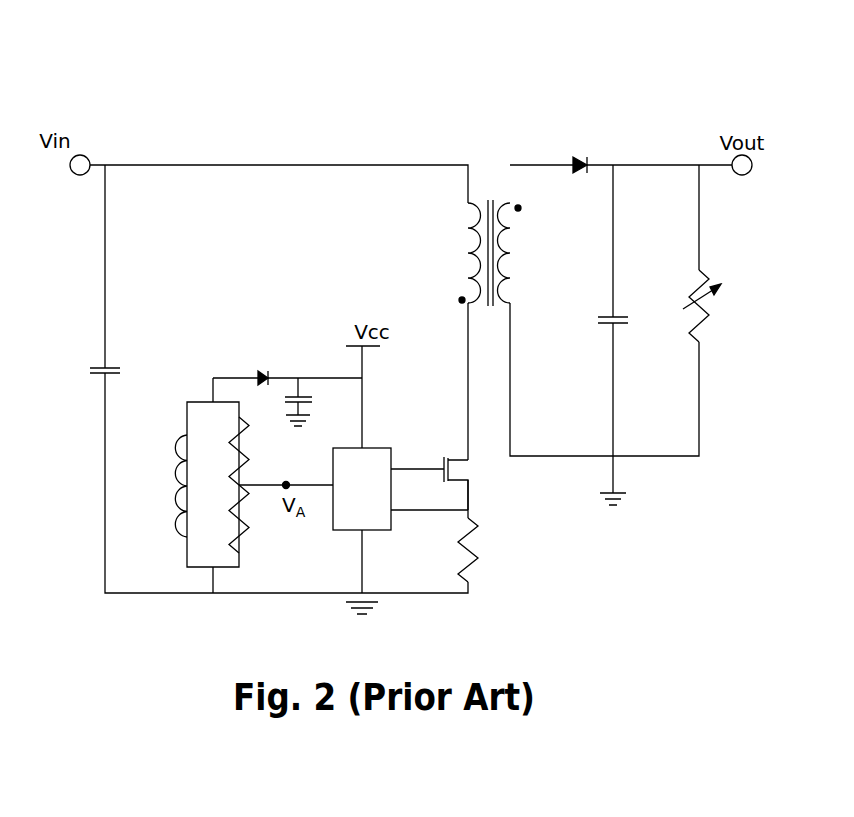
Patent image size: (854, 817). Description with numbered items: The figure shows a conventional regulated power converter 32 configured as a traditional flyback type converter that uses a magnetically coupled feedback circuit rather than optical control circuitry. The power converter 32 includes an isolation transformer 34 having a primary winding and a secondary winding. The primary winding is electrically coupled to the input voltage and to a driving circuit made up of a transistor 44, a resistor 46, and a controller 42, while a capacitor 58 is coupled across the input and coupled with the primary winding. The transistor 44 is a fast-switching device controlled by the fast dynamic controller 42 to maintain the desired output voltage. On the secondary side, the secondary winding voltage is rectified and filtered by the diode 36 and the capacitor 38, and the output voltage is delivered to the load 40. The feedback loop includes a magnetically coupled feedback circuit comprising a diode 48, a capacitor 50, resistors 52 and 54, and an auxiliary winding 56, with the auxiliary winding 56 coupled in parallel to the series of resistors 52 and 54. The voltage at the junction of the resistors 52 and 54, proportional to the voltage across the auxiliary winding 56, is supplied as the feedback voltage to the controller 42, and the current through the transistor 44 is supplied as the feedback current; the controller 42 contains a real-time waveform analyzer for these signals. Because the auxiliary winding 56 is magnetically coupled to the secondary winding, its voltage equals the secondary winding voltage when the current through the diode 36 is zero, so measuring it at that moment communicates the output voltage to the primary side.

The power converter 32 is at (648, 82).
The isolation transformer 34 is at (482, 177).
The diode 36 is at (583, 157).
The capacitor 38 is at (598, 320).
The load 40 is at (707, 302).
The controller 42 is at (384, 451).
The transistor 44 is at (440, 455).
The resistor 46 is at (460, 546).
The diode 48 is at (263, 380).
The capacitor 50 is at (312, 399).
The resistor 52 is at (249, 452).
The resistor 54 is at (249, 529).
The auxiliary winding 56 is at (175, 487).
The capacitor 58 is at (90, 371).